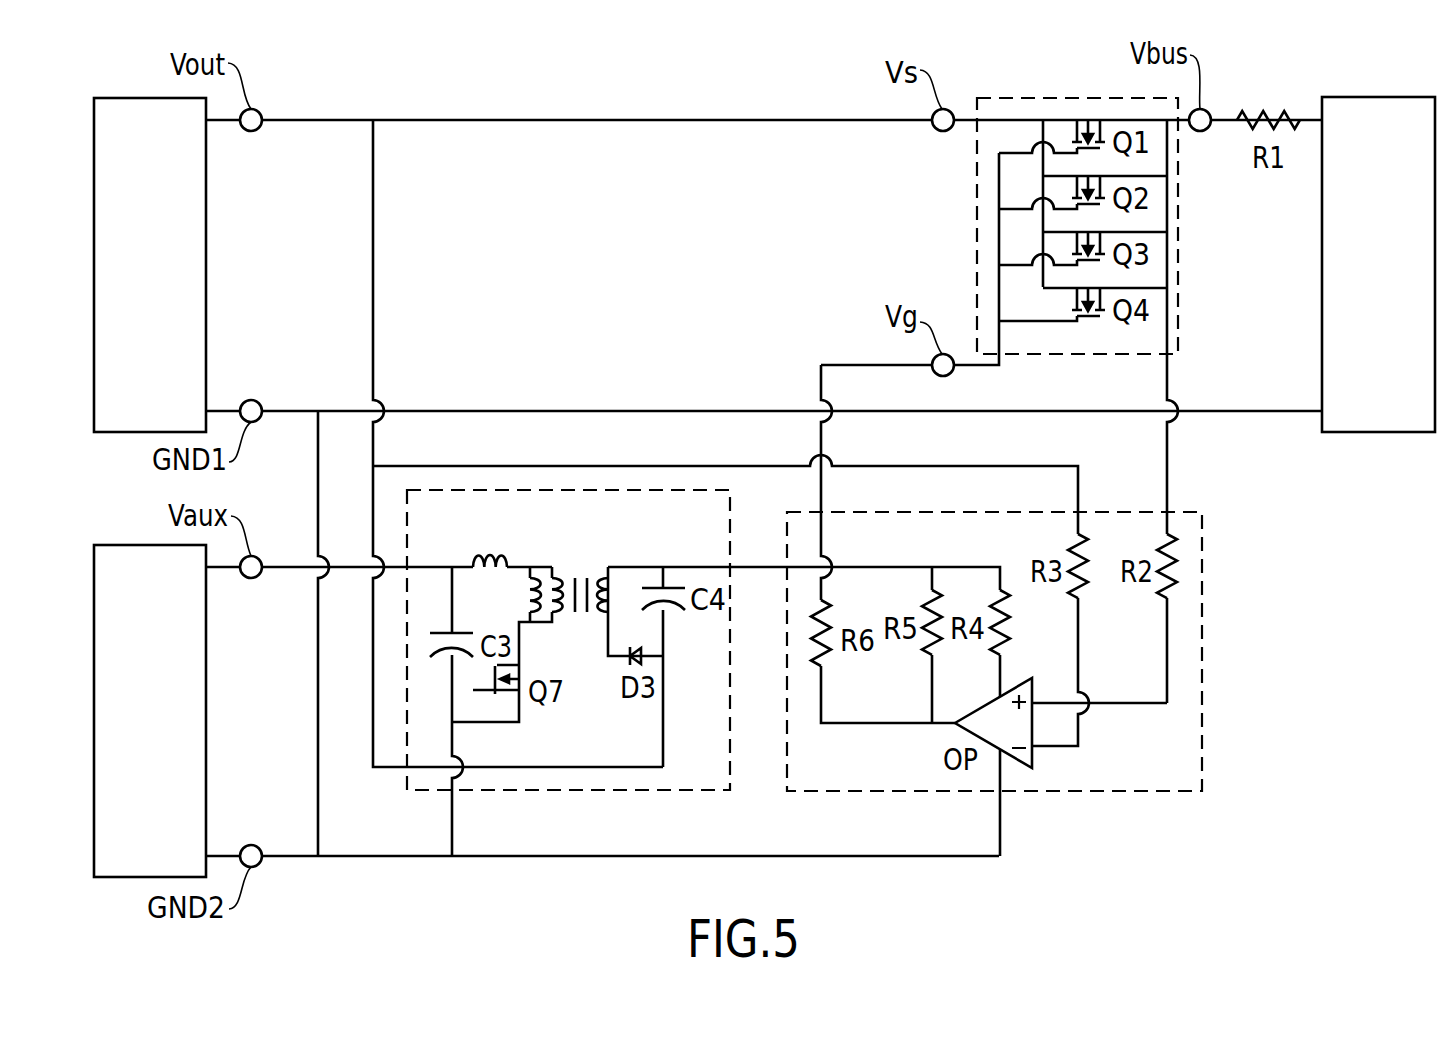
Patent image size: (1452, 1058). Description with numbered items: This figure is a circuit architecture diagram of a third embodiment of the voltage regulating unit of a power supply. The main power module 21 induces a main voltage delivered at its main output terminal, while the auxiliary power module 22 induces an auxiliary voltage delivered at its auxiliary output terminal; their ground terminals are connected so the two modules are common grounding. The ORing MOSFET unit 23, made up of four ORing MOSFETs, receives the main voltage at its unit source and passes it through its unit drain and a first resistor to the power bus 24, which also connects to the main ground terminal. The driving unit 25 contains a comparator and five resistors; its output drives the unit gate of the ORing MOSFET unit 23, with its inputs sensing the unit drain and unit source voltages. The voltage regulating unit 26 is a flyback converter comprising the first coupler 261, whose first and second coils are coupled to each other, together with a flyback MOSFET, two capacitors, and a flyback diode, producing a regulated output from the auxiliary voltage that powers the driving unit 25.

The main power module 21 is at (134, 98).
The auxiliary power module 22 is at (134, 545).
The ORing MOSFET unit 23 is at (1040, 97).
The power bus 24 is at (1362, 433).
The driving unit 25 is at (1161, 793).
The voltage regulating unit 26 is at (675, 792).
The first coupler 261 is at (584, 542).